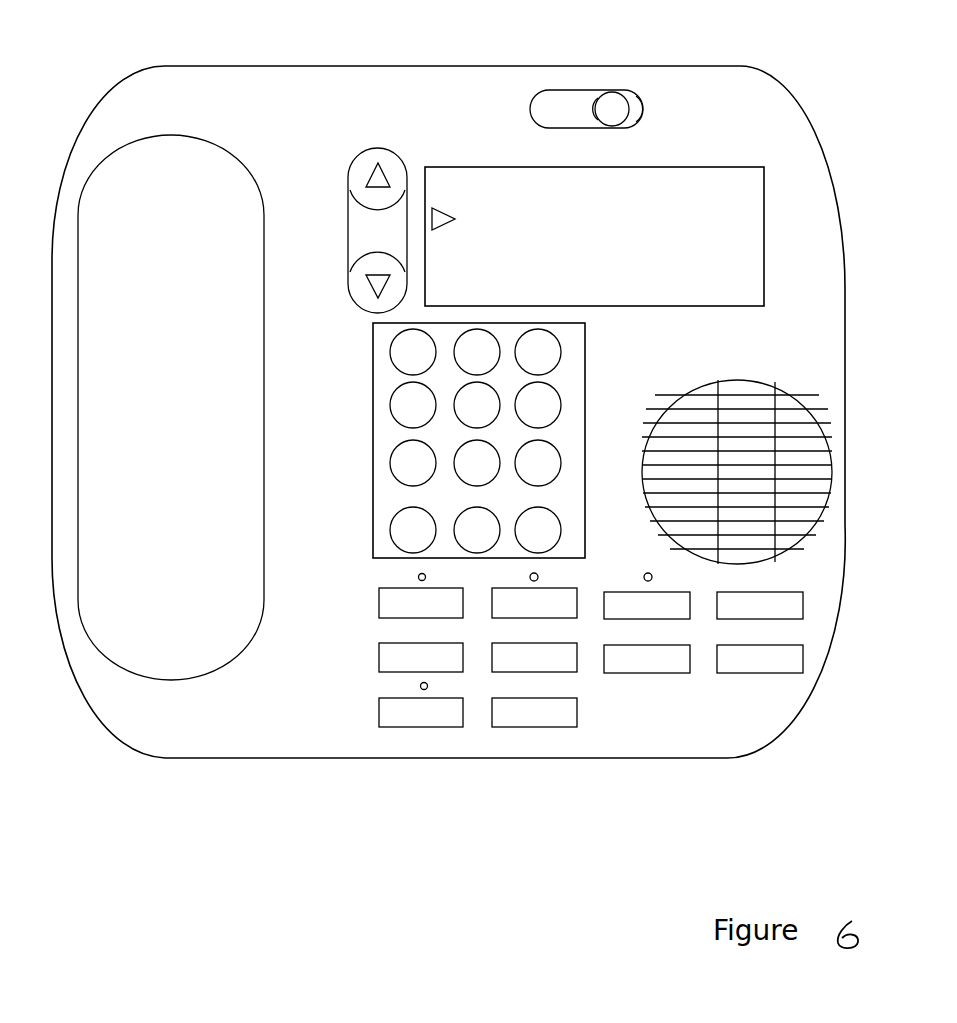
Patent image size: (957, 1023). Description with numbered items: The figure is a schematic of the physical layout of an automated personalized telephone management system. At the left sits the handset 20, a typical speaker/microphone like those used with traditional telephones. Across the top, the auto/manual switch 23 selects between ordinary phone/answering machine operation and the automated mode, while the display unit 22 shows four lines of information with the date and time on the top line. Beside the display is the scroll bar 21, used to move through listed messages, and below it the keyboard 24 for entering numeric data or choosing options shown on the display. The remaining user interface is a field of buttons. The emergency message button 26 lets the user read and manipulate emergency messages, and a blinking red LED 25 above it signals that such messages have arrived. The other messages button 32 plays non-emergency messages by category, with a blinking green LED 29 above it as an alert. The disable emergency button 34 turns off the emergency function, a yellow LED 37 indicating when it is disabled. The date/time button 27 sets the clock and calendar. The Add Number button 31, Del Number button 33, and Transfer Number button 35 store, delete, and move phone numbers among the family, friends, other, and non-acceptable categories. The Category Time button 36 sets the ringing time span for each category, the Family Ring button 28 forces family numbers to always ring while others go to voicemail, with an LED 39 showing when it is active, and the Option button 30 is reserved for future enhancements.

The handset 20 is at (176, 133).
The scroll bar 21 is at (378, 150).
The display unit 22 is at (483, 167).
The auto/manual switch 23 is at (592, 92).
The keyboard 24 is at (373, 440).
The blinking red LED 25 is at (418, 577).
The emergency message button 26 is at (379, 602).
The date/time button 27 is at (379, 657).
The Family Ring button 28 is at (379, 712).
The blinking green LED 29 is at (530, 580).
The Option button 30 is at (575, 718).
The Add Number button 31 is at (577, 660).
The other messages button 32 is at (577, 605).
The Del Number button 33 is at (690, 597).
The disable emergency button 34 is at (690, 670).
The Transfer Number button 35 is at (803, 665).
The Category Time button 36 is at (803, 610).
The yellow LED 37 is at (652, 579).
The LED 39 is at (420, 686).